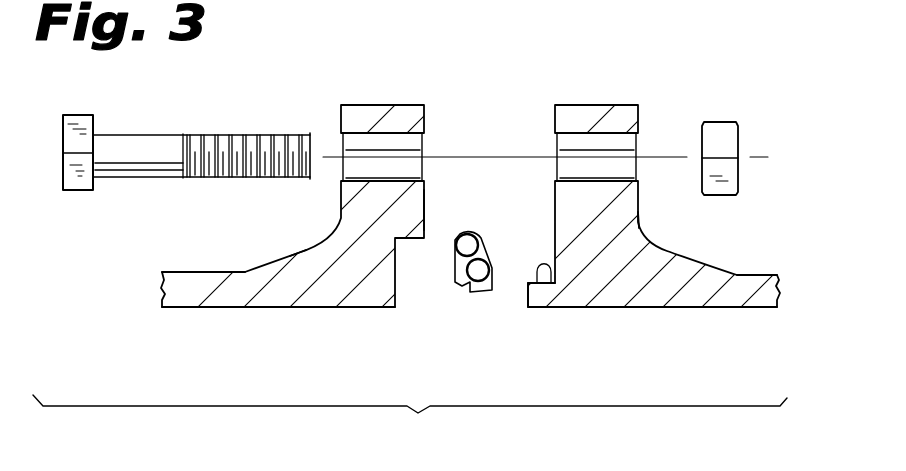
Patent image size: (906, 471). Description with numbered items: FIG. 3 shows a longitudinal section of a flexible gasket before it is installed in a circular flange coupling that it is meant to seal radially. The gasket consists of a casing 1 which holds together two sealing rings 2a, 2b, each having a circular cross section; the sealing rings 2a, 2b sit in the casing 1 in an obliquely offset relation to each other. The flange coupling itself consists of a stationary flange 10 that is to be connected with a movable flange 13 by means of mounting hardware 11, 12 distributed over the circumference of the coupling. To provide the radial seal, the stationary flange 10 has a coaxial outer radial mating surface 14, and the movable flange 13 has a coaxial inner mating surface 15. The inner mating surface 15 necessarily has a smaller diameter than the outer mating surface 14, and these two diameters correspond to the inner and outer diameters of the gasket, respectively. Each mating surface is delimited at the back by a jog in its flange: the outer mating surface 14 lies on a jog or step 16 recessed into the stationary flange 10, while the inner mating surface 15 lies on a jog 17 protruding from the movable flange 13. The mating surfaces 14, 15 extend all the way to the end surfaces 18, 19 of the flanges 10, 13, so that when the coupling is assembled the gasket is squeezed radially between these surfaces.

The casing 1 is at (484, 282).
The sealing ring 2a is at (474, 221).
The sealing ring 2b is at (478, 292).
The stationary flange 10 is at (272, 290).
The mounting hardware 11 is at (118, 143).
The mounting hardware 12 is at (720, 137).
The movable flange 13 is at (722, 287).
The outer radial mating surface 14 is at (420, 240).
The inner mating surface 15 is at (545, 268).
The jog 16 is at (314, 257).
The jog 17 is at (556, 221).
The end surface 18 is at (425, 208).
The end surface 19 is at (530, 292).